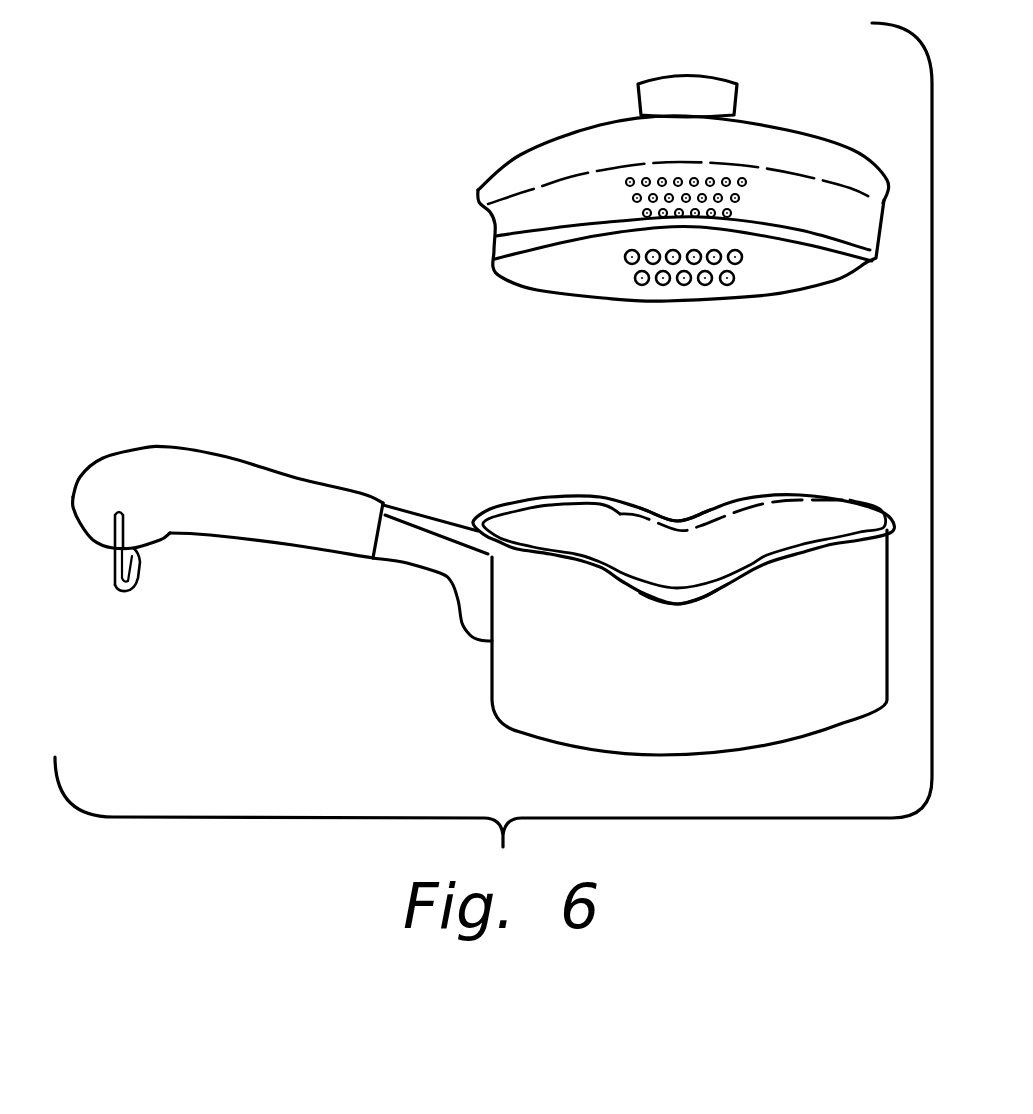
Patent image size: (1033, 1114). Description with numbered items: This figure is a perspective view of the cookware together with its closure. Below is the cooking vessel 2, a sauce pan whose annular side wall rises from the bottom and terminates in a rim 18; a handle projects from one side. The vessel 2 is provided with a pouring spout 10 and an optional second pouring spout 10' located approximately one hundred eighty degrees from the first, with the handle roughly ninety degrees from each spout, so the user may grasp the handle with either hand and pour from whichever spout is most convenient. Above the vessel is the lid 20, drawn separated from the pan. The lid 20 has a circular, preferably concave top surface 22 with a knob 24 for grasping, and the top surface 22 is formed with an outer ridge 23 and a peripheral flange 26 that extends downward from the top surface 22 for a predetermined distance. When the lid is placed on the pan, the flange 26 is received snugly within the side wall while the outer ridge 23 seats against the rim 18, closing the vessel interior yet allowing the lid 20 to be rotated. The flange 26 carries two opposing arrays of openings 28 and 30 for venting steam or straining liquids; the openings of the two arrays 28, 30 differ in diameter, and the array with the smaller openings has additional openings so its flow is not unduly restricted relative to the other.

The cooking vessel 2 is at (484, 605).
The pouring spout 10 is at (705, 620).
The second pouring spout 10' is at (675, 481).
The rim 18 is at (505, 508).
The lid 20 is at (642, 194).
The top surface 22 is at (600, 133).
The outer ridge 23 is at (490, 213).
The knob 24 is at (683, 76).
The peripheral flange 26 is at (507, 233).
The array of openings 28 is at (617, 207).
The array of openings 30 is at (648, 287).